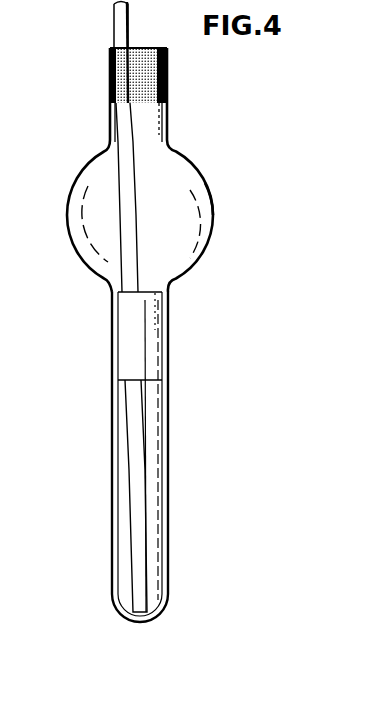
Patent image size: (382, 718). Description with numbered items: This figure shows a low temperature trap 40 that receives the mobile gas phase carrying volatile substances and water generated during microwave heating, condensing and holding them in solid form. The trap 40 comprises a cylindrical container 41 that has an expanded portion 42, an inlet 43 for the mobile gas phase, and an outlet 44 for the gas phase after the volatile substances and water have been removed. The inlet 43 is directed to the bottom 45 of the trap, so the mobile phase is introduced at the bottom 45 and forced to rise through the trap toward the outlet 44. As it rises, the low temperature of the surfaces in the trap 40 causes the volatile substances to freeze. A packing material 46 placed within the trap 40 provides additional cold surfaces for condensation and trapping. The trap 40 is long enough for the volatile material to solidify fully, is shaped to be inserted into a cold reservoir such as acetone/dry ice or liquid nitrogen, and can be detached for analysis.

The low temperature trap 40 is at (175, 226).
The cylindrical container 41 is at (110, 127).
The expanded portion 42 is at (208, 198).
The inlet 43 is at (114, 21).
The outlet 44 is at (150, 47).
The bottom 45 is at (140, 623).
The packing material 46 is at (138, 343).